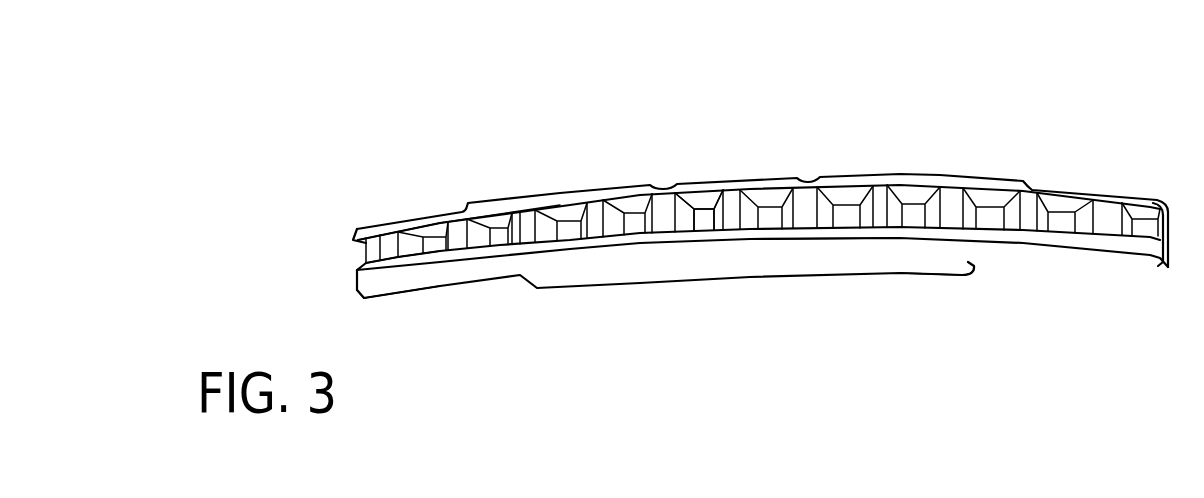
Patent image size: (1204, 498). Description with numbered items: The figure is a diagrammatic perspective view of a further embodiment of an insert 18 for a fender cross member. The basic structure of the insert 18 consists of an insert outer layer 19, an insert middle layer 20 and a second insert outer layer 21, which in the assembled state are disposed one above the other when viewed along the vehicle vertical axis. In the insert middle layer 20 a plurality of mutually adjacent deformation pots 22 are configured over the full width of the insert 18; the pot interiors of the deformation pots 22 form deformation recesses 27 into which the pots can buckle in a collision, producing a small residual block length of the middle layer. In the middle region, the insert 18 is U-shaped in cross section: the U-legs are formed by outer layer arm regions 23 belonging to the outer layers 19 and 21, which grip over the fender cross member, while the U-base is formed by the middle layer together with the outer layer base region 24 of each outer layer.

The insert 18 is at (515, 152).
The insert outer layer 19 is at (373, 289).
The insert middle layer 20 is at (390, 247).
The insert outer layer 21 is at (387, 228).
The deformation pots 22 is at (634, 224).
The outer layer arm regions 23 is at (808, 265).
The outer layer base region 24 is at (957, 253).
The deformation recesses 27 is at (710, 222).